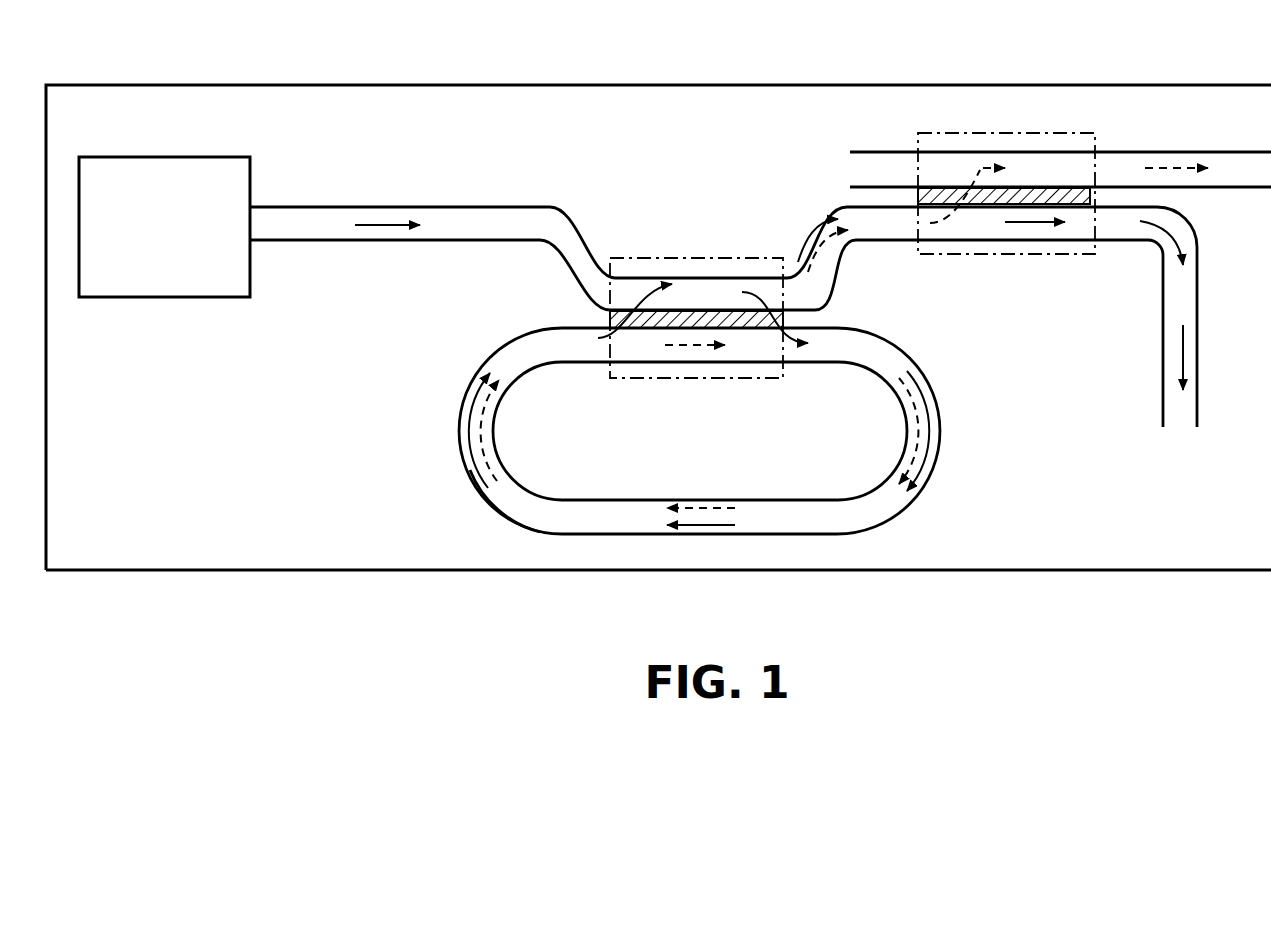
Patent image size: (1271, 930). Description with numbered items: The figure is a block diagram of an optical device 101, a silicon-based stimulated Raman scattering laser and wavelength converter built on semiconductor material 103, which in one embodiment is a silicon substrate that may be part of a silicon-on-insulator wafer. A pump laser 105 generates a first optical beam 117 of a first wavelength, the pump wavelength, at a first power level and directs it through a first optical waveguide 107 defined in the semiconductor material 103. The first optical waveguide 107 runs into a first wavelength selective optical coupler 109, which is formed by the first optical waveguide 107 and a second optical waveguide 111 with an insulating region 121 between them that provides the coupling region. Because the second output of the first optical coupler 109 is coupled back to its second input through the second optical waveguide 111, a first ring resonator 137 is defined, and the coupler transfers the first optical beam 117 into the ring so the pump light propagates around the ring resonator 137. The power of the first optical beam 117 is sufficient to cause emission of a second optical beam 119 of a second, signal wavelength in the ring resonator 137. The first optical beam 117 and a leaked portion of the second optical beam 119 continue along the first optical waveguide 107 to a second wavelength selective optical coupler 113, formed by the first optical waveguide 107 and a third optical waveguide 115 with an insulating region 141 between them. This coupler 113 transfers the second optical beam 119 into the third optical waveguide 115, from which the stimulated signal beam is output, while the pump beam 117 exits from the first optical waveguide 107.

The optical device 101 is at (1116, 40).
The semiconductor material 103 is at (1020, 571).
The pump laser 105 is at (185, 157).
The first optical waveguide 107 is at (465, 207).
The first wavelength selective optical coupler 109 is at (655, 258).
The second optical waveguide 111 is at (600, 362).
The second wavelength selective optical coupler 113 is at (995, 255).
The third optical waveguide 115 is at (858, 152).
The first optical beam 117 is at (392, 243).
The second optical beam 119 is at (690, 348).
The insulating region 121 is at (610, 325).
The first ring resonator 137 is at (527, 512).
The insulating region 141 is at (1090, 193).